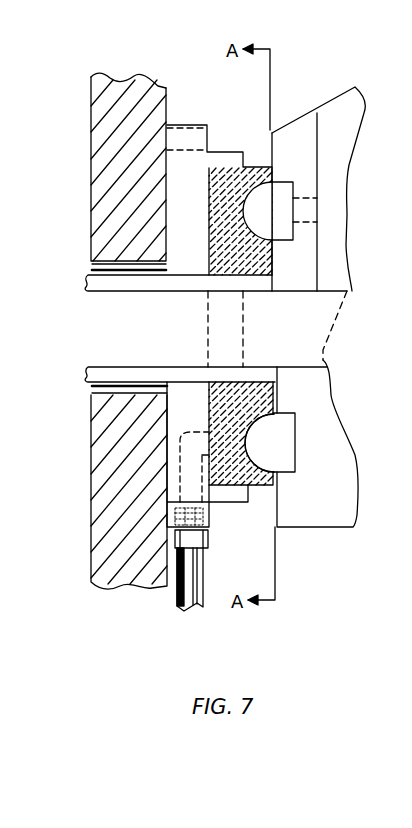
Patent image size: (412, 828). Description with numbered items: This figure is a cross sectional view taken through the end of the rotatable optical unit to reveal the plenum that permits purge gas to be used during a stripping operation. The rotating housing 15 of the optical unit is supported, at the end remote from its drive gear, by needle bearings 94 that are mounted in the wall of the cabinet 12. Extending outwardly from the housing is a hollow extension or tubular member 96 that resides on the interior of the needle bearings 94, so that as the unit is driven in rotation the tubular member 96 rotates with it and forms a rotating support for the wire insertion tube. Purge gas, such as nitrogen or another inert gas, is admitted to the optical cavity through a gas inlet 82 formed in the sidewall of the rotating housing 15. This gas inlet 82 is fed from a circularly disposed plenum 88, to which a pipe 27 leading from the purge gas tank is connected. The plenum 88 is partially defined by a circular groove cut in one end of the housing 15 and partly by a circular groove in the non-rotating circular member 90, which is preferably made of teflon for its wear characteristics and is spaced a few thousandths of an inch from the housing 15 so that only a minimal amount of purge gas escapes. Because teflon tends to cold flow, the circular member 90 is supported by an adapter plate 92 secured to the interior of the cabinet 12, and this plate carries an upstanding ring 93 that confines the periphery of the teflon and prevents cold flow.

The cabinet 12 is at (94, 99).
The housing 15 is at (327, 468).
The pipe 27 is at (196, 590).
The gas inlet 82 is at (305, 209).
The plenum 88 is at (283, 440).
The circular member 90 is at (276, 478).
The adapter plate 92 is at (190, 163).
The upstanding ring 93 is at (236, 493).
The needle bearings 94 is at (92, 268).
The tubular member 96 is at (103, 372).